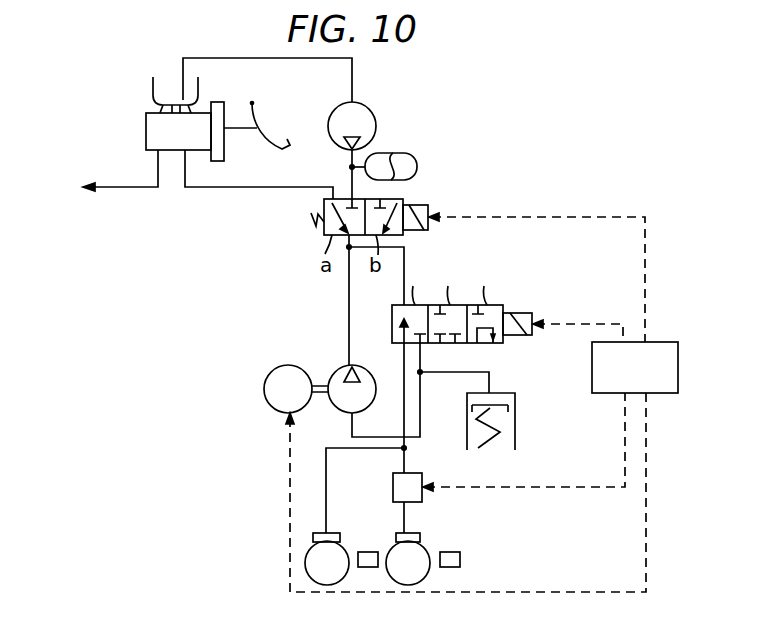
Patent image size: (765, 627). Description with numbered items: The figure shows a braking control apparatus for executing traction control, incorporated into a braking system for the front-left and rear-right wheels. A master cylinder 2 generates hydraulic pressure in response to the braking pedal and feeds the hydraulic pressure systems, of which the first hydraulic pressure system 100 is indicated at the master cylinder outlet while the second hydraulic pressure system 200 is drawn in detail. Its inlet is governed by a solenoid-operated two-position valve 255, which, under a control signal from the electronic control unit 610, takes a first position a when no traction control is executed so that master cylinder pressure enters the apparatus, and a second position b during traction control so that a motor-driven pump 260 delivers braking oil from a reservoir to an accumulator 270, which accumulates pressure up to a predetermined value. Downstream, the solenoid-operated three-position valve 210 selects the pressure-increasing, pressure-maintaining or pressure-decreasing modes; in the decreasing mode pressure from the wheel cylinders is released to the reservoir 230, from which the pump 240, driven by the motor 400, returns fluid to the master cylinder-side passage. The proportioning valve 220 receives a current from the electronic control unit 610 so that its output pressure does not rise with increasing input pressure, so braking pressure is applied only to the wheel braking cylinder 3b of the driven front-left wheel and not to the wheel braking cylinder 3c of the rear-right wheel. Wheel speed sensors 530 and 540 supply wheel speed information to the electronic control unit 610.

The master cylinder 2 is at (146, 126).
The first hydraulic pressure system 100 is at (113, 174).
The motor-driven pump 260 is at (371, 109).
The accumulator 270 is at (403, 153).
The second hydraulic pressure system 200 is at (442, 194).
The solenoid-operated two-position valve 255 is at (311, 232).
The solenoid-operated three-position valve 210 is at (515, 305).
The electronic control unit 610 is at (592, 364).
The motor 400 is at (289, 365).
The pump 240 is at (338, 368).
The reservoir 230 is at (516, 432).
The proportioning valve 220 is at (420, 473).
The wheel braking cylinder 3b is at (313, 542).
The wheel speed sensor 530 is at (366, 552).
The wheel braking cylinder 3c is at (421, 542).
The wheel speed sensor 540 is at (460, 560).